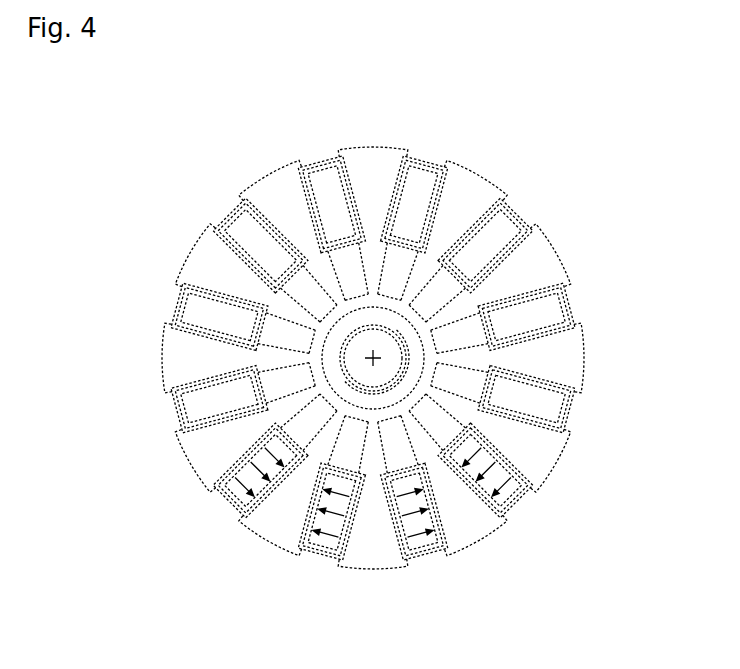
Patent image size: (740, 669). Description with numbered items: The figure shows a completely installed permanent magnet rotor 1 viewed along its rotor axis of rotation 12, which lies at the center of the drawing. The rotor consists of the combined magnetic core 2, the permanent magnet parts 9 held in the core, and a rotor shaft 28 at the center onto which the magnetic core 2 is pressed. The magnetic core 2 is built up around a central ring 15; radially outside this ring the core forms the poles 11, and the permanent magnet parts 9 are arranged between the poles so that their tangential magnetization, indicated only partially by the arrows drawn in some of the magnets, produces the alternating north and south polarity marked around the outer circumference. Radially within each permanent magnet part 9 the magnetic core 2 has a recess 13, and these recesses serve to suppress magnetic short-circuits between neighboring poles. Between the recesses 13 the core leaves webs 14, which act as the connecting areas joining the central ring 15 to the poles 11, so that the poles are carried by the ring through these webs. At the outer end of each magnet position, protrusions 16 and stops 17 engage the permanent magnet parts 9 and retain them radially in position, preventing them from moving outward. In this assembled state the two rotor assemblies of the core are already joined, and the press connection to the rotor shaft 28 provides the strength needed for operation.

The permanent magnet rotor 1 is at (402, 99).
The magnetic core 2 is at (466, 164).
The permanent magnet parts 9 is at (488, 238).
The poles 11 is at (537, 268).
The rotor axis of rotation 12 is at (381, 362).
The recesses 13 is at (303, 287).
The webs 14 is at (305, 395).
The central ring 15 is at (357, 295).
The protrusions 16 is at (163, 322).
The stops 17 is at (263, 303).
The rotor shaft 28 is at (355, 362).